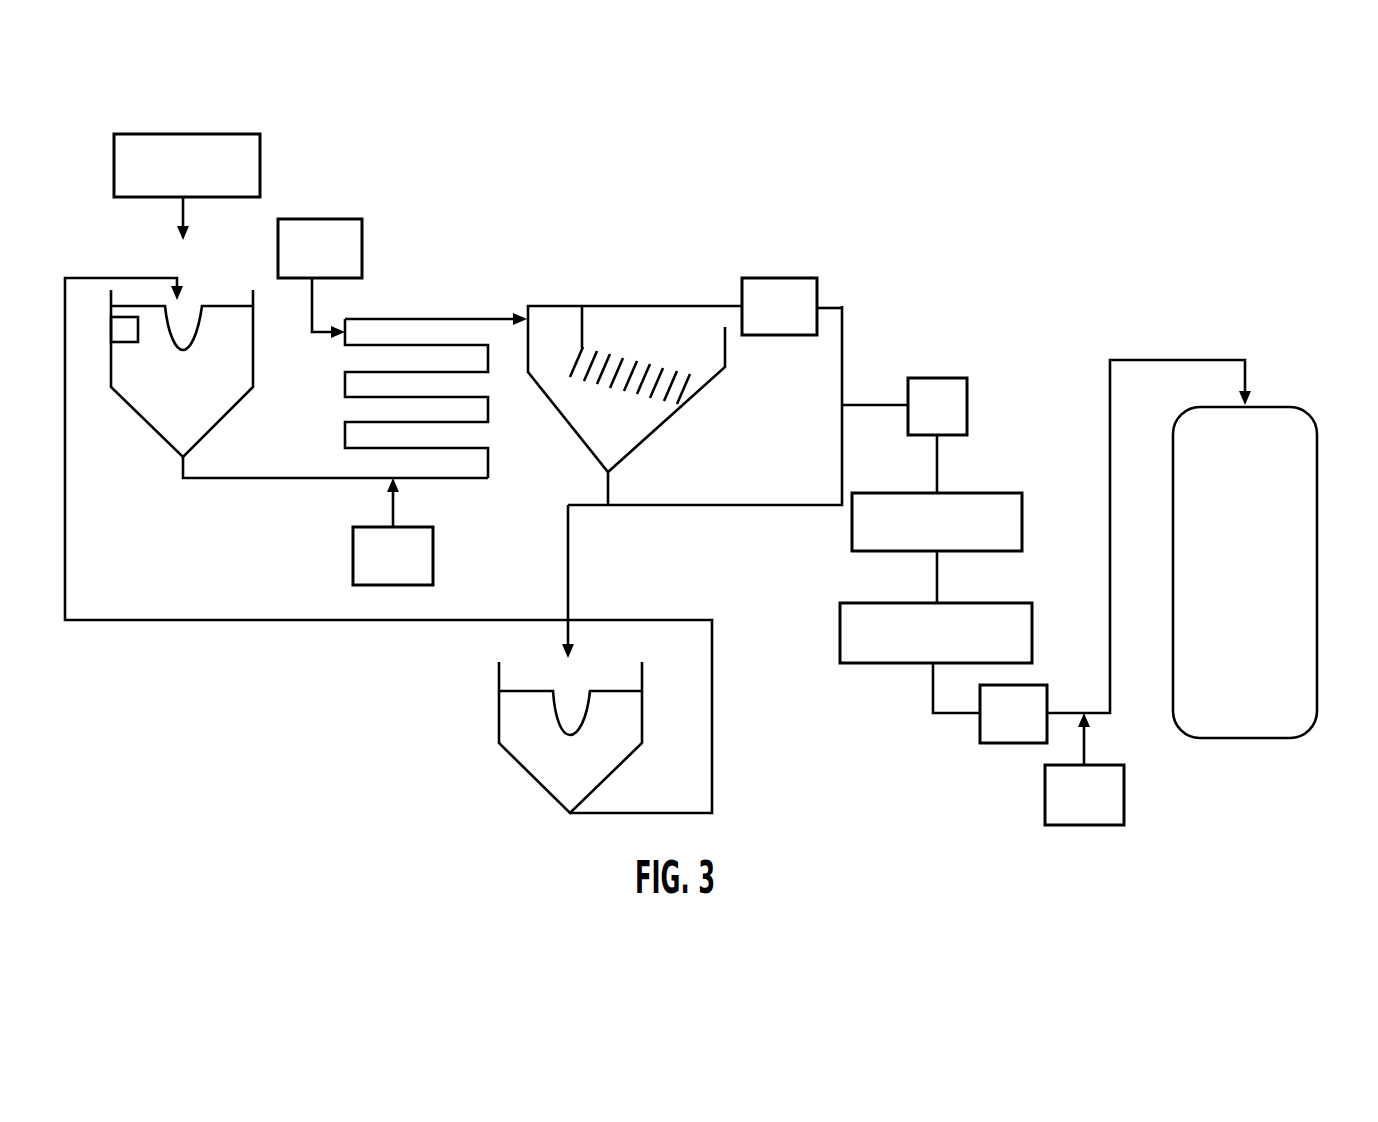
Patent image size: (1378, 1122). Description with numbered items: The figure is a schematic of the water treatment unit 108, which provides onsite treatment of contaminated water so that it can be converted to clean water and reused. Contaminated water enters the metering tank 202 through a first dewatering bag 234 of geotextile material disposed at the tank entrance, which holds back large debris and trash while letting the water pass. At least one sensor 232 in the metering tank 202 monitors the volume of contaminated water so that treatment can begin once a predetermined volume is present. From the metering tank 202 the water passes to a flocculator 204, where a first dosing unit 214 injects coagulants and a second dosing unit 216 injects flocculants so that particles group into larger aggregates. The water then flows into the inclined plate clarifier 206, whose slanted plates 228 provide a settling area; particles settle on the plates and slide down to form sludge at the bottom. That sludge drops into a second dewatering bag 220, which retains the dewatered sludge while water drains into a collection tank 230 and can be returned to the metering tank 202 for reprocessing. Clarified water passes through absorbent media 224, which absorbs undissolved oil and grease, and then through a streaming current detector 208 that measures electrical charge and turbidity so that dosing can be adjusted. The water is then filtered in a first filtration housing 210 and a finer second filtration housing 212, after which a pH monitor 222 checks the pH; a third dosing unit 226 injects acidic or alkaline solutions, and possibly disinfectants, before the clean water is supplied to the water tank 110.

The water treatment unit 108 is at (61, 167).
The water tank 110 is at (1317, 630).
The metering tank 202 is at (173, 425).
The flocculator 204 is at (423, 345).
The inclined plate clarifier 206 is at (672, 312).
The streaming current detector 208 is at (930, 377).
The first filtration housing 210 is at (1003, 493).
The second filtration housing 212 is at (872, 665).
The first dosing unit 214 is at (412, 587).
The second dosing unit 216 is at (325, 218).
The second dewatering bag 220 is at (557, 715).
The pH monitor 222 is at (1013, 745).
The absorbent media 224 is at (782, 278).
The third dosing unit 226 is at (1125, 803).
The slanted plates 228 is at (605, 350).
The collection tank 230 is at (563, 778).
The sensor 232 is at (113, 328).
The first dewatering bag 234 is at (183, 350).